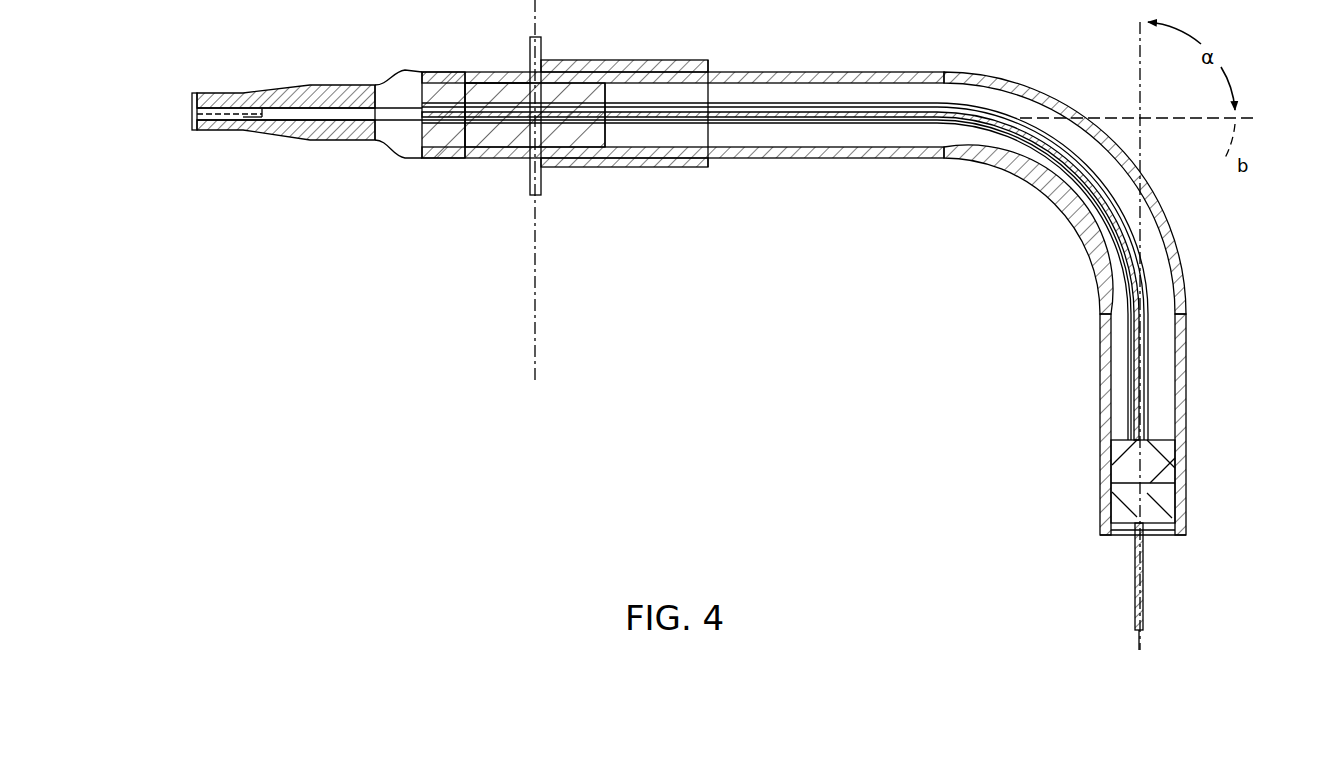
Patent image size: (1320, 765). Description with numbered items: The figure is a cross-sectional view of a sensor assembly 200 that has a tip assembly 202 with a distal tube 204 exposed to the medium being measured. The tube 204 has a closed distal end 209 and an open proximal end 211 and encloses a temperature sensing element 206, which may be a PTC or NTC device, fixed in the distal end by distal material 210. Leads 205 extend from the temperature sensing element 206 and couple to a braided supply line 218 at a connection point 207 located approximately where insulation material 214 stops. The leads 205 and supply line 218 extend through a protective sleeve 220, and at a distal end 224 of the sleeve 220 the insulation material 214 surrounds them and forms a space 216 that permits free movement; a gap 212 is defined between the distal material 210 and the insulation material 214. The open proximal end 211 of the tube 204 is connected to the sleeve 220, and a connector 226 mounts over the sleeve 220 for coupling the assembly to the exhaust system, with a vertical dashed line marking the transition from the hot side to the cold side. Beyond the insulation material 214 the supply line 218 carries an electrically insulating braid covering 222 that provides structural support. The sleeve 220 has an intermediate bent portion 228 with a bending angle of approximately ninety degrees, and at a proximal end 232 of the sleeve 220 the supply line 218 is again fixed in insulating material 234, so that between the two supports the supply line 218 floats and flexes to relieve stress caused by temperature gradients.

The sensor assembly 200 is at (795, 392).
The tip assembly 202 is at (306, 82).
The distal tube 204 is at (293, 137).
The leads 205 is at (338, 110).
The temperature sensing element 206 is at (214, 128).
The connection point 207 is at (593, 98).
The closed distal end 209 is at (194, 110).
The distal material 210 is at (322, 128).
The open proximal end 211 is at (463, 100).
The gap 212 is at (397, 133).
The insulation material 214 is at (498, 135).
The space 216 is at (458, 130).
The braided supply line 218 is at (749, 125).
The protective sleeve 220 is at (428, 78).
The braid covering 222 is at (865, 103).
The distal end of the sleeve 224 is at (430, 158).
The connector 226 is at (544, 48).
The intermediate bent portion 228 is at (1048, 196).
The proximal end of the sleeve 232 is at (1184, 495).
The insulating material 234 is at (1118, 497).